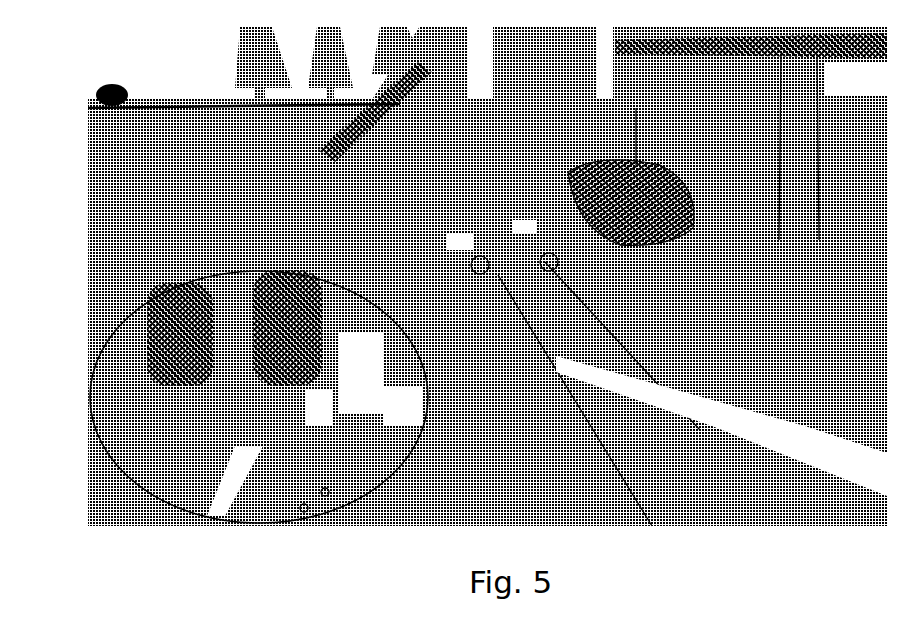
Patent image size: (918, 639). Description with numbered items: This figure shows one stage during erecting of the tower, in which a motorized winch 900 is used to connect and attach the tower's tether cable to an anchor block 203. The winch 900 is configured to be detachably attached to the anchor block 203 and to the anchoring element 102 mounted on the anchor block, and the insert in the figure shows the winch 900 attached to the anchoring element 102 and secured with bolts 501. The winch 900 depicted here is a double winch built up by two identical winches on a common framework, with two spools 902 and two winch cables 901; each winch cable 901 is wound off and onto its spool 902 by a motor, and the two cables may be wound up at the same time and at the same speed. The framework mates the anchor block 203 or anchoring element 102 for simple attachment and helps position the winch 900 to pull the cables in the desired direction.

The motorized winch 900 is at (662, 193).
The winch cable 901 is at (137, 350).
The spool 902 is at (207, 290).
The anchor element 102 is at (592, 316).
The anchor block 203 is at (695, 396).
The bolts 501 is at (304, 508).